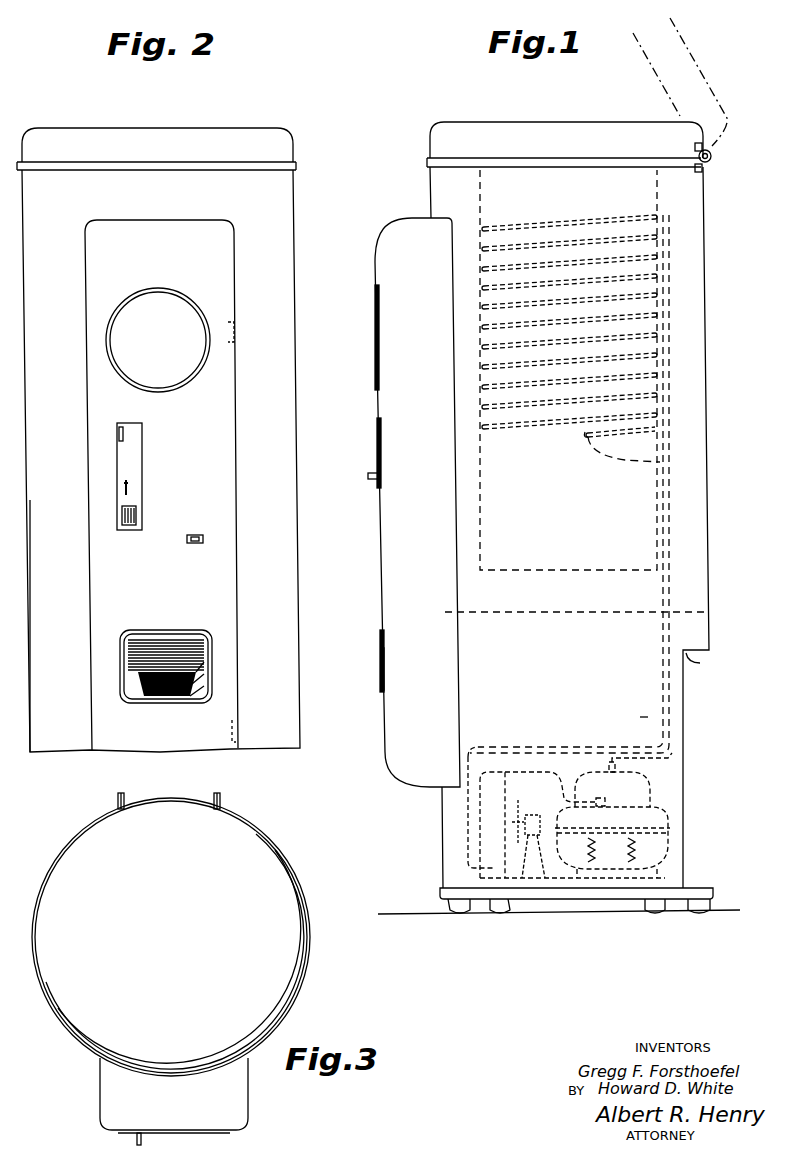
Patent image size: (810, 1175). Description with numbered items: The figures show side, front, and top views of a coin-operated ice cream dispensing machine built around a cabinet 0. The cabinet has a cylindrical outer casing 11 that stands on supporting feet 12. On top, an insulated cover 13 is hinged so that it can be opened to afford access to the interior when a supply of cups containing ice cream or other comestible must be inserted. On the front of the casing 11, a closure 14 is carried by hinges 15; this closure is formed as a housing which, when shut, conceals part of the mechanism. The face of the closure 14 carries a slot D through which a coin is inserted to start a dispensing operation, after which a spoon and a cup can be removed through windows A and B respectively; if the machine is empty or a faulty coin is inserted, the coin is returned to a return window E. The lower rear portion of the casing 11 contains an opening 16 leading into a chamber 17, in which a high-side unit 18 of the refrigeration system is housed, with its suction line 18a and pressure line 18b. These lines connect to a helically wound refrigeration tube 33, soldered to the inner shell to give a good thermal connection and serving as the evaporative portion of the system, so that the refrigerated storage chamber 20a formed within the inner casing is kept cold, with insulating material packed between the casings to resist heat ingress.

In FIG. 2, the cabinet 0 is at (298, 206).
In FIG. 2, the outer casing 11 is at (296, 270).
In FIG. 1, the outer casing 11 is at (707, 542).
In FIG. 1, the supporting feet 12 is at (466, 914).
In FIG. 2, the insulated cover 13 is at (150, 130).
In FIG. 1, the insulated cover 13 is at (547, 122).
In FIG. 3, the insulated cover 13 is at (53, 976).
In FIG. 2, the closure 14 is at (161, 485).
In FIG. 1, the closure 14 is at (383, 241).
In FIG. 3, the closure 14 is at (174, 1101).
In FIG. 2, the hinges 15 is at (237, 333).
In FIG. 1, the opening 16 is at (700, 663).
In FIG. 1, the chamber 17 is at (648, 717).
In FIG. 1, the high-side unit 18 is at (668, 820).
In FIG. 1, the suction line 18a is at (674, 757).
In FIG. 1, the pressure line 18b is at (468, 828).
In FIG. 1, the refrigerated storage chamber 20a is at (652, 194).
In FIG. 1, the refrigeration tube 33 is at (662, 428).
In FIG. 2, the window A is at (199, 534).
In FIG. 2, the window B is at (172, 630).
In FIG. 1, the window B is at (382, 663).
In FIG. 2, the slot D is at (118, 436).
In FIG. 2, the return window E is at (135, 526).